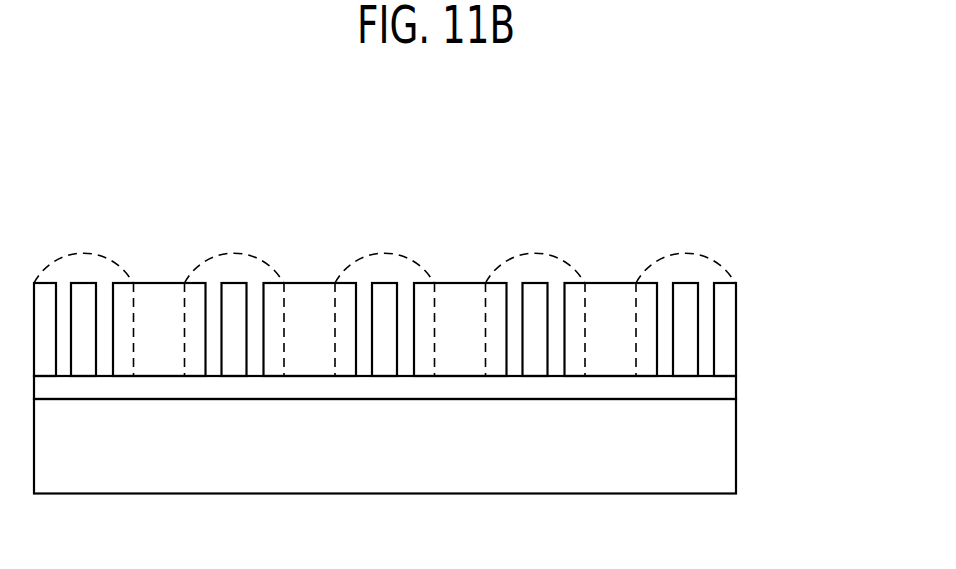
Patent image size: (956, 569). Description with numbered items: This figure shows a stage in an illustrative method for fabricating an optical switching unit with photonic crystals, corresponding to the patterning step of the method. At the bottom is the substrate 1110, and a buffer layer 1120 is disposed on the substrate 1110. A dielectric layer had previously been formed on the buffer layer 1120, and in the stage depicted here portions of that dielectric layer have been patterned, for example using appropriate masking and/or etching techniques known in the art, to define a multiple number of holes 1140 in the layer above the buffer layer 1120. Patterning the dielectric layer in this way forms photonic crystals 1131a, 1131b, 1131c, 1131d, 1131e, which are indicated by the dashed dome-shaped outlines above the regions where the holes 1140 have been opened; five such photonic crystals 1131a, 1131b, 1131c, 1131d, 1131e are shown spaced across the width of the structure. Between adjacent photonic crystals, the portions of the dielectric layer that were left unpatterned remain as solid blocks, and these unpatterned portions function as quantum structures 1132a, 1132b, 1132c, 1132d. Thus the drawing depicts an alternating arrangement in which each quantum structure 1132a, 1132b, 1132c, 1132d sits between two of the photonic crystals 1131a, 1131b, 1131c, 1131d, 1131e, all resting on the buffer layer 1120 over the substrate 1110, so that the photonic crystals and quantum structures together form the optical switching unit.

The substrate 1110 is at (735, 448).
The buffer layer 1120 is at (735, 385).
The holes 1140 is at (708, 320).
The photonic crystal 1131a is at (84, 253).
The photonic crystal 1131b is at (234, 253).
The photonic crystal 1131c is at (384, 253).
The photonic crystal 1131d is at (535, 253).
The photonic crystal 1131e is at (686, 253).
The quantum structure 1132a is at (159, 283).
The quantum structure 1132b is at (310, 283).
The quantum structure 1132c is at (460, 283).
The quantum structure 1132d is at (610, 283).